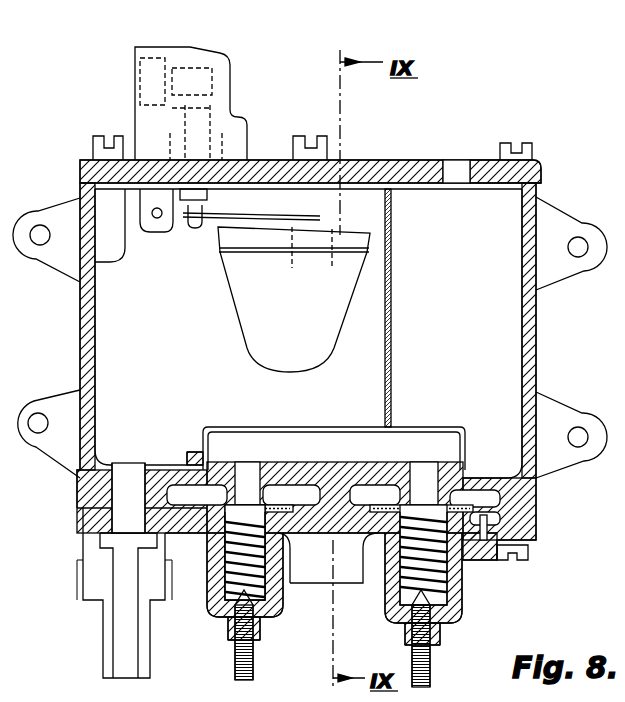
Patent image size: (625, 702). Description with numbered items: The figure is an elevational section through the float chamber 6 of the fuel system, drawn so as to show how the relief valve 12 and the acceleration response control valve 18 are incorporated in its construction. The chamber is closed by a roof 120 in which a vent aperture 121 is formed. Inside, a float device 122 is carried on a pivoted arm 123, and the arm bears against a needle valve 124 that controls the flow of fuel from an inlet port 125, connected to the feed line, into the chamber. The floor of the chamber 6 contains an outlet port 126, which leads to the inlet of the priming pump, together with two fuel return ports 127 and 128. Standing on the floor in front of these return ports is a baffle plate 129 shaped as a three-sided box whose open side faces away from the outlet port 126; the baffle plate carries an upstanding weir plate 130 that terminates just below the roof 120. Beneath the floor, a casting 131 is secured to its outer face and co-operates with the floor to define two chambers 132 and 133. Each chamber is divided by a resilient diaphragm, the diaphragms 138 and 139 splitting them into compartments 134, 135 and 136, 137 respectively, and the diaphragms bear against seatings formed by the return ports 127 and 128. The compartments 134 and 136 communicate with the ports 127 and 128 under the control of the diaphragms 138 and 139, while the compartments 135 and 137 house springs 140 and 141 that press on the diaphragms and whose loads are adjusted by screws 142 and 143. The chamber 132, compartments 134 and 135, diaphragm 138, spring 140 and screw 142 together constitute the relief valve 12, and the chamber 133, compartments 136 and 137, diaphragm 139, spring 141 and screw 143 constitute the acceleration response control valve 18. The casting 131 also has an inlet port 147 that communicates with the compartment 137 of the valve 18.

The float chamber 6 is at (533, 327).
The relief valve 12 is at (205, 623).
The acceleration response control valve 18 is at (465, 600).
The roof 120 is at (350, 172).
The vent aperture 121 is at (453, 172).
The float device 122 is at (248, 309).
The pivoted arm 123 is at (228, 222).
The needle valve 124 is at (195, 232).
The inlet port 125 is at (152, 66).
The outlet port 126 is at (122, 486).
The fuel return port 127 is at (247, 480).
The fuel return port 128 is at (422, 483).
The baffle plate 129 is at (248, 428).
The weir plate 130 is at (392, 270).
The casting 131 is at (290, 545).
The chamber 132 is at (157, 463).
The chamber 133 is at (523, 497).
The compartment 134 is at (213, 489).
The compartment 135 is at (137, 467).
The compartment 136 is at (473, 500).
The compartment 137 is at (492, 521).
The resilient diaphragm 138 is at (194, 476).
The resilient diaphragm 139 is at (380, 505).
The spring 140 is at (225, 578).
The spring 141 is at (394, 578).
The screw 142 is at (254, 671).
The screw 143 is at (412, 655).
The inlet port 147 is at (480, 548).